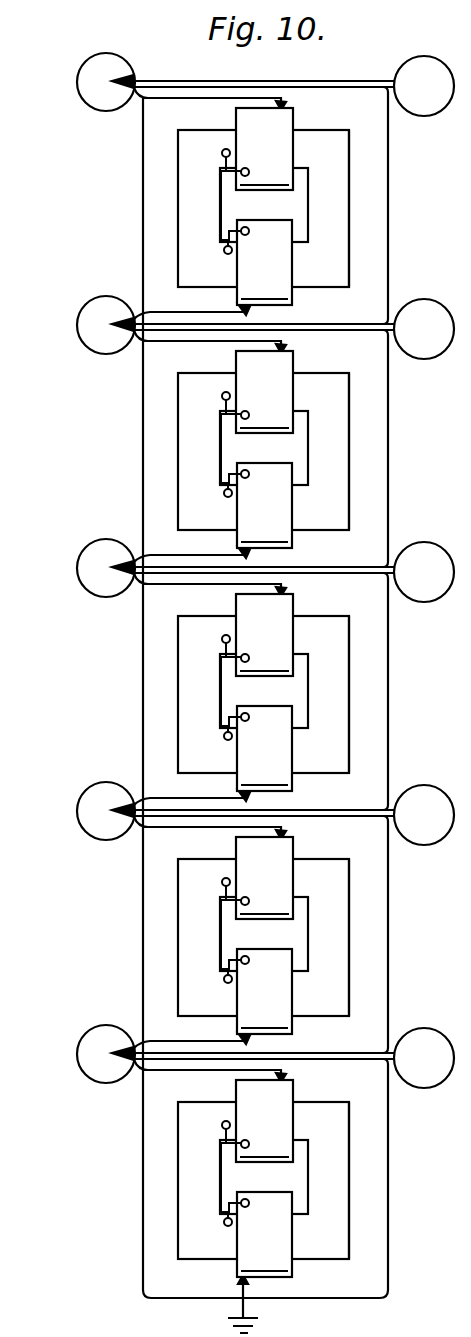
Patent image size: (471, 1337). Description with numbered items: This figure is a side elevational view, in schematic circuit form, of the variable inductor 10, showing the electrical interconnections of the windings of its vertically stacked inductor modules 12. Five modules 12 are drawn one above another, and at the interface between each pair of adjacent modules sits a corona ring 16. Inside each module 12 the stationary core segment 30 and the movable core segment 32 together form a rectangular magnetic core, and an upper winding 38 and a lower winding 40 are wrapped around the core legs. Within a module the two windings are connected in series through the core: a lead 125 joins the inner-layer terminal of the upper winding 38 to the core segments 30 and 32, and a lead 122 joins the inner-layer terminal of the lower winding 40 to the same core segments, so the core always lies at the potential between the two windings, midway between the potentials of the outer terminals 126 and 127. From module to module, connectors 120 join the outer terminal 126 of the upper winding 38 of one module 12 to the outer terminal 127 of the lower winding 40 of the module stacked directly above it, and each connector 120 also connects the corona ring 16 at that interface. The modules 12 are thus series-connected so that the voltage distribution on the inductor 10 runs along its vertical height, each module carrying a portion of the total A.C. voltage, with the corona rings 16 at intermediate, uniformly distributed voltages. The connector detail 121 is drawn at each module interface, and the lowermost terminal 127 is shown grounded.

The variable inductor 10 is at (50, 77).
The inductor module 12 is at (143, 190).
The corona ring 16 is at (106, 53).
The stationary core segment 30 is at (199, 859).
The movable core segment 32 is at (352, 914).
The upper winding 38 is at (294, 148).
The lower winding 40 is at (297, 267).
The connector 120 is at (123, 337).
The connector wedge 121 is at (128, 317).
The lead 122 is at (225, 968).
The lead 125 is at (221, 884).
The terminal 126 is at (288, 100).
The terminal 127 is at (248, 309).